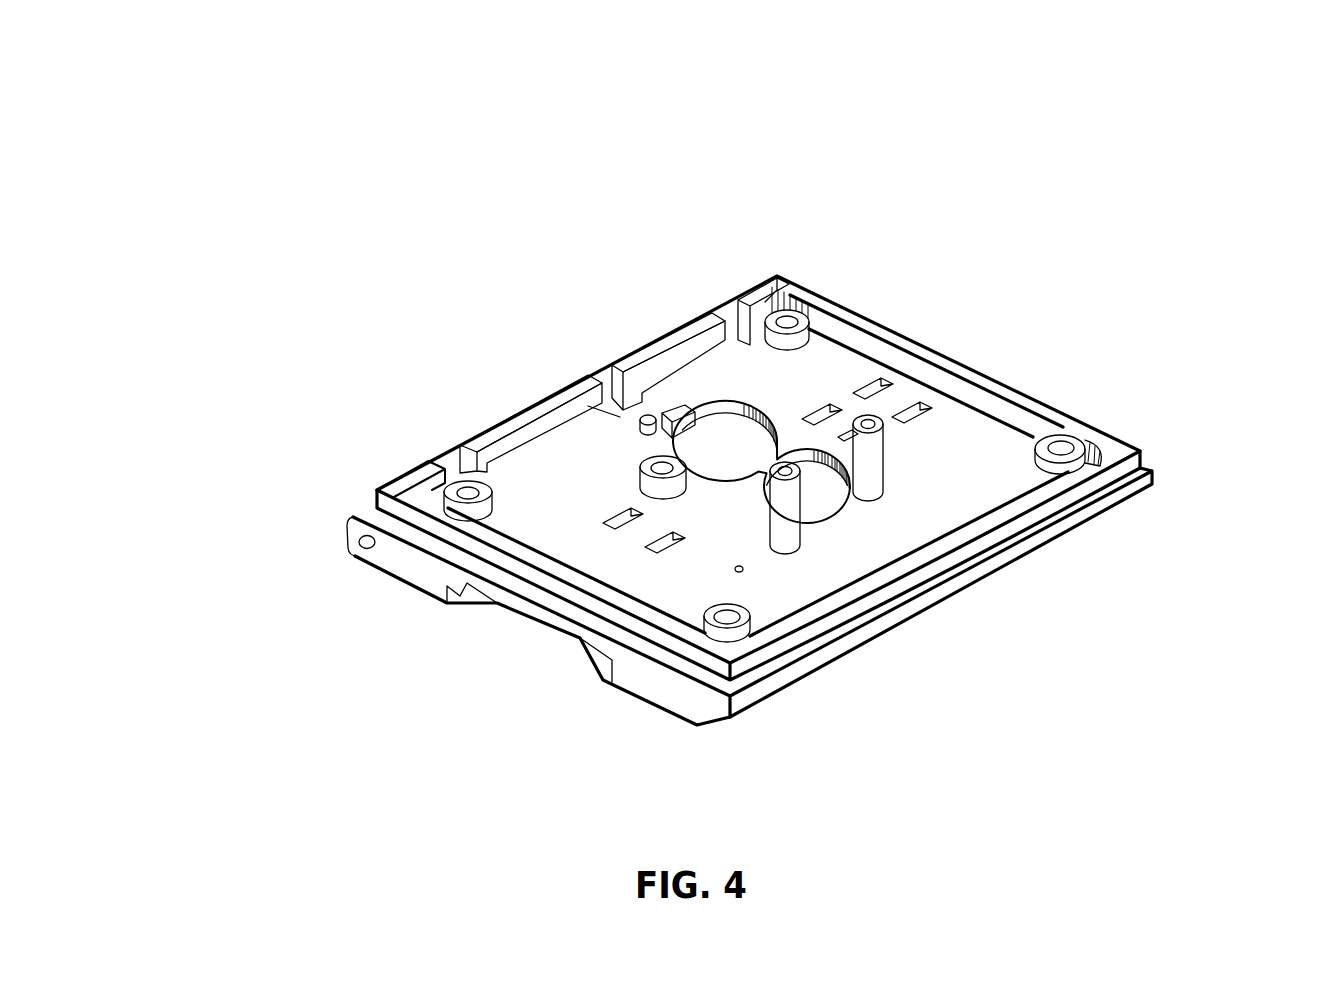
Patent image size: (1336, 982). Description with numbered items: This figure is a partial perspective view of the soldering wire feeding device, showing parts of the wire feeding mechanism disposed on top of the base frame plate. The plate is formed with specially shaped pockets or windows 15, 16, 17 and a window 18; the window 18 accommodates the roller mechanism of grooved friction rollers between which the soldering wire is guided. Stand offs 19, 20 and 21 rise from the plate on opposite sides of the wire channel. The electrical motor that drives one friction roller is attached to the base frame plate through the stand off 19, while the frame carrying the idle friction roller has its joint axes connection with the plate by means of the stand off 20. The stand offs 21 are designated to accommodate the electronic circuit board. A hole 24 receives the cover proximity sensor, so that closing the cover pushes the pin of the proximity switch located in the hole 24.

The pocket or window 15 is at (640, 562).
The pocket or window 16 is at (848, 428).
The pocket or window 17 is at (893, 377).
The window 18 is at (709, 447).
The stand off 19 is at (815, 541).
The stand off 20 is at (628, 458).
The stand offs 21 is at (771, 300).
The hole of the cover proximity sensor 24 is at (730, 567).